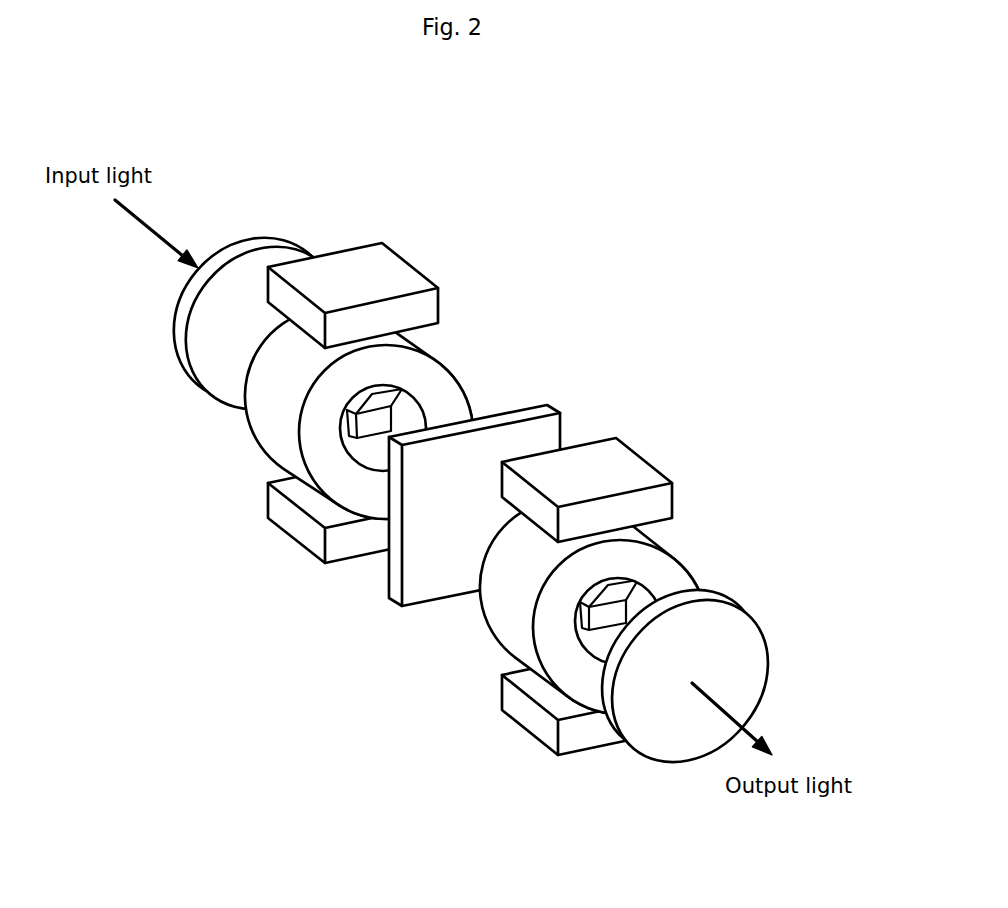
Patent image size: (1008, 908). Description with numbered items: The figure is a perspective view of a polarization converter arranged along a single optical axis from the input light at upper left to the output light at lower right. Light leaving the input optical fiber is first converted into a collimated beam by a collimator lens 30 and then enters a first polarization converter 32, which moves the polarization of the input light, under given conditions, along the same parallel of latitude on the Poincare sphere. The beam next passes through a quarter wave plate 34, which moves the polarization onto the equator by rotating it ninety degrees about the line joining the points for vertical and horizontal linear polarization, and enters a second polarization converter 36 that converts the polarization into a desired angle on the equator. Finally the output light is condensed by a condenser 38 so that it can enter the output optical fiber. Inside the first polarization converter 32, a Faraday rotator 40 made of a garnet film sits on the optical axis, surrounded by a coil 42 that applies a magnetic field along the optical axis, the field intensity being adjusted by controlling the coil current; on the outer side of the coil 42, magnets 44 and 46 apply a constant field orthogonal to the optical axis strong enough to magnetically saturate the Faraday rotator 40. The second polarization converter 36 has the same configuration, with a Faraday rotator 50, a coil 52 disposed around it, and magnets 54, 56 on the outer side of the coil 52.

The collimator lens 30 is at (237, 253).
The first polarization converter 32 is at (333, 356).
The quarter wave plate 34 is at (508, 418).
The second polarization converter 36 is at (560, 561).
The condenser 38 is at (677, 740).
The Faraday rotator 40 is at (389, 421).
The coil 42 is at (274, 396).
The magnet 44 is at (392, 274).
The magnet 46 is at (272, 522).
The Faraday rotator 50 is at (613, 615).
The coil 52 is at (505, 602).
The magnet 54 is at (628, 475).
The magnet 56 is at (528, 718).